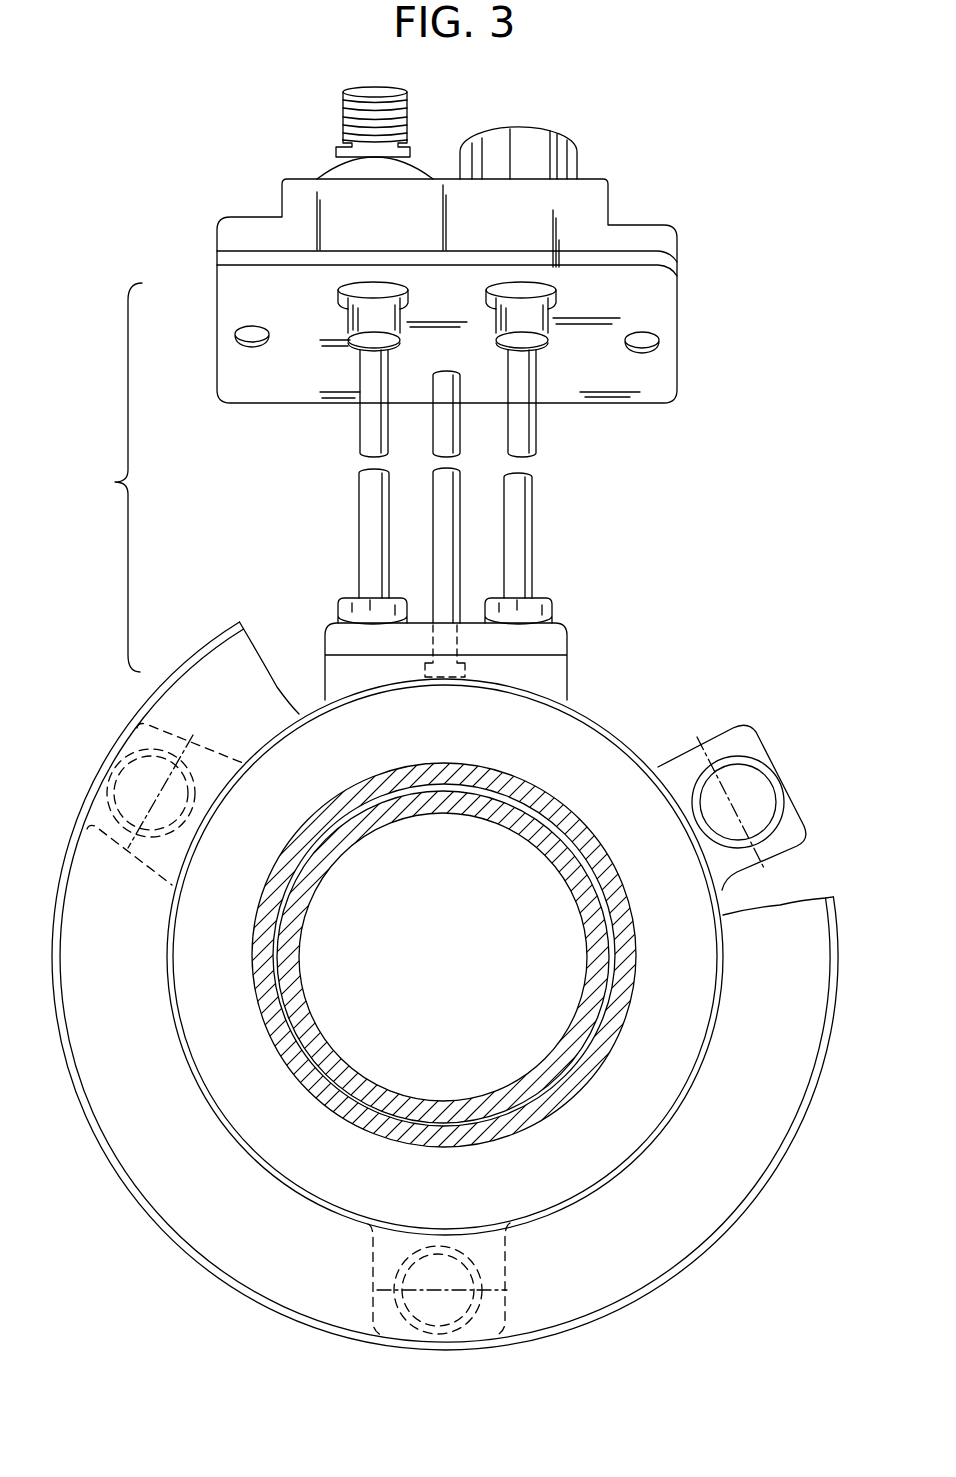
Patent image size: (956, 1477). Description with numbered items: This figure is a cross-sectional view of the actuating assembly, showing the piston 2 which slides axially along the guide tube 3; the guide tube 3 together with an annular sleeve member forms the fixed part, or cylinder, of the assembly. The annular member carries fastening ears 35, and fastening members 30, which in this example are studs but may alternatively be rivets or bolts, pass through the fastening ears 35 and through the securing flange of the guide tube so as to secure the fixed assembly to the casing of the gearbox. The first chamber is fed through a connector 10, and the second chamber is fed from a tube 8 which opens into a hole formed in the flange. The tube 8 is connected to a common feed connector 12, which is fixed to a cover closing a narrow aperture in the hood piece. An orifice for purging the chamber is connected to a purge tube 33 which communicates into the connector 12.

The common feed connector 12 is at (447, 245).
The purge tube 33 is at (370, 513).
The tube 8 is at (448, 520).
The connector 10 is at (520, 512).
The piston 2 is at (568, 808).
The guide tube 3 is at (523, 1073).
The fastening ears 35 is at (718, 732).
The fastening members 30 is at (760, 795).